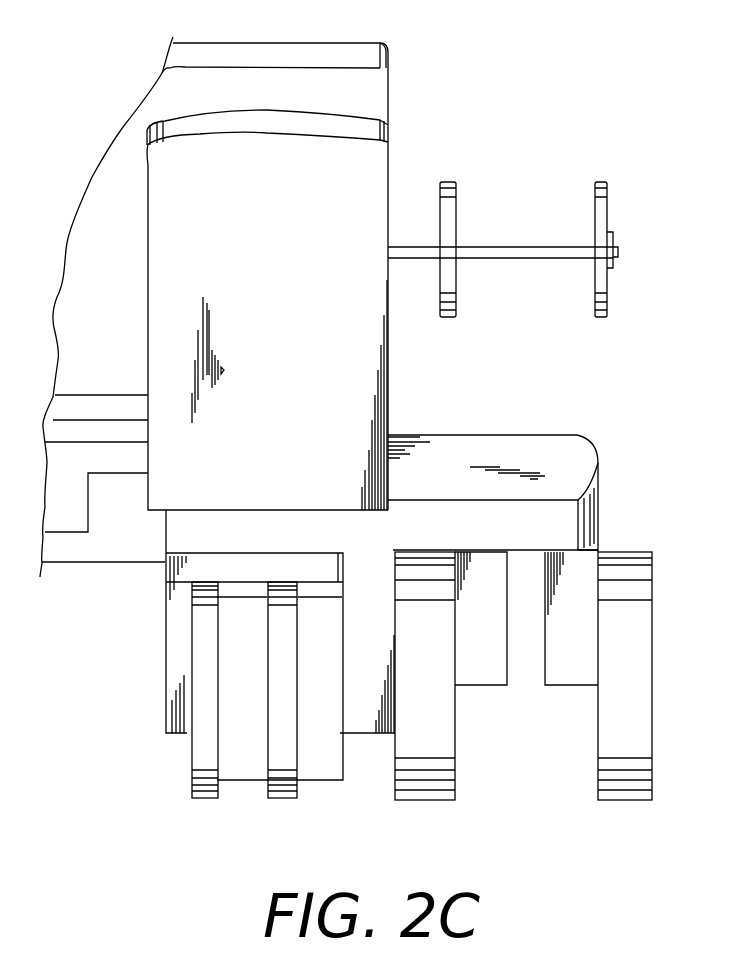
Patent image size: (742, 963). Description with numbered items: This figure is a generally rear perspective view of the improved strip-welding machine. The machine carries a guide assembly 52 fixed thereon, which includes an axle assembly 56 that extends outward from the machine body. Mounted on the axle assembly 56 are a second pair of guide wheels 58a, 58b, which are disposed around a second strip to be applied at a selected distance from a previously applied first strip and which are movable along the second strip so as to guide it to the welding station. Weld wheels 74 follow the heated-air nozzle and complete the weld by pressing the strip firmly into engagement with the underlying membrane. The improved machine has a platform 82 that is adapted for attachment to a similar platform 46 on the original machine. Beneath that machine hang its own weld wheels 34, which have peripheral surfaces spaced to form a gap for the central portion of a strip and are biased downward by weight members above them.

The guide assembly 52 is at (542, 250).
The axle assembly 56 is at (545, 212).
The second guide wheel (first of second pair) 58a is at (452, 318).
The second guide wheel (second of second pair) 58b is at (600, 318).
The platform 82 is at (582, 520).
The weld wheels 74 is at (445, 722).
The platform 46 is at (195, 572).
The weld wheels 34 is at (285, 800).